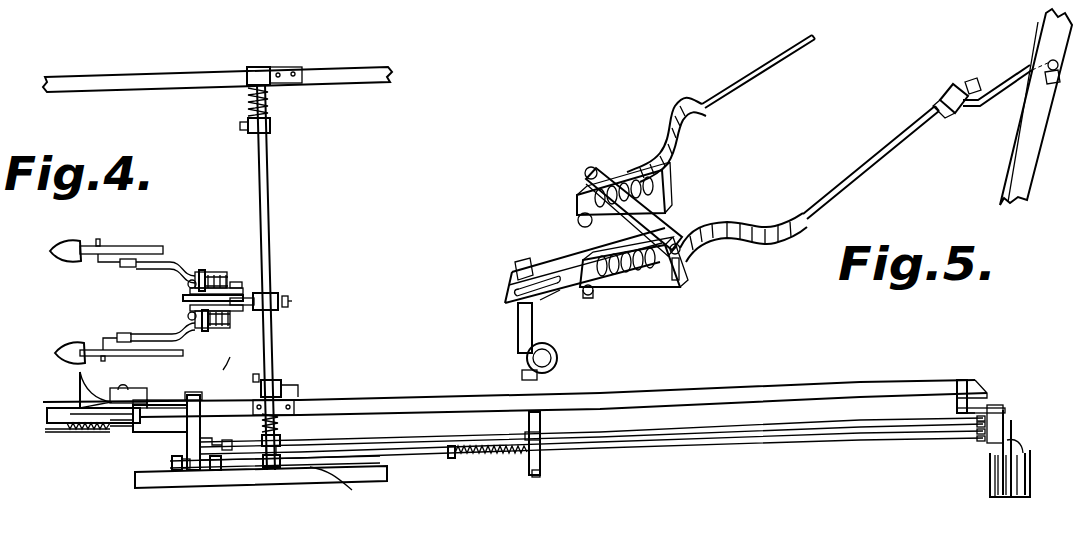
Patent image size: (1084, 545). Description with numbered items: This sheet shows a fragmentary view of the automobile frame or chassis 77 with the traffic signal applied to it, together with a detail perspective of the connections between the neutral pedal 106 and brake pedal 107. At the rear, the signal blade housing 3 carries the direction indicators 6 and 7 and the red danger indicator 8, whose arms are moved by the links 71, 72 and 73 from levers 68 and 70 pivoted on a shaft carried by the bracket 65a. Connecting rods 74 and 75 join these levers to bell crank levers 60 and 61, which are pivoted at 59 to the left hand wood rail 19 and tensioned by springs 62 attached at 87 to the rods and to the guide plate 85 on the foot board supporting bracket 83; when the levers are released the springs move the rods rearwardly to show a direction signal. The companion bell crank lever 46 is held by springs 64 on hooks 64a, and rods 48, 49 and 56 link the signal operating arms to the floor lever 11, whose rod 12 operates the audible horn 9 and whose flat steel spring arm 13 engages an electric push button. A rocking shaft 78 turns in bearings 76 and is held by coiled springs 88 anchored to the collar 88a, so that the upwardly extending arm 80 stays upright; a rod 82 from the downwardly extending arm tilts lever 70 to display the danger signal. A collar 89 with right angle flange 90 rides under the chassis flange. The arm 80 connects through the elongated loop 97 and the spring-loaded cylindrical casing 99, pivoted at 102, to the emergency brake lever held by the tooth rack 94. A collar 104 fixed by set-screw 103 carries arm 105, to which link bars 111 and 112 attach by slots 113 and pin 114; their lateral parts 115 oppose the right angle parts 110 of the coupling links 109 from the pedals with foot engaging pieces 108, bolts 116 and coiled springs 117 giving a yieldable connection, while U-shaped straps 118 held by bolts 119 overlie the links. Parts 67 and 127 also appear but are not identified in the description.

In FIG. 4, the signal blade housing 3 is at (1030, 485).
In FIG. 4, the direction indicator 6 is at (995, 493).
In FIG. 4, the direction indicator 7 is at (1008, 497).
In FIG. 4, the danger indicator 8 is at (1018, 493).
In FIG. 4, the audible signal horn 9 is at (110, 381).
In FIG. 4, the lever 11 is at (190, 397).
In FIG. 4, the rod 12 is at (123, 384).
In FIG. 4, the flat steel spring arm 13 is at (143, 398).
In FIG. 4, the left hand wood rail 19 is at (310, 473).
In FIG. 4, the bell crank lever 46 is at (220, 470).
In FIG. 4, the rod 48 is at (180, 402).
In FIG. 4, the rod 49 is at (193, 422).
In FIG. 4, the rod 56 is at (178, 404).
In FIG. 4, the pivot 59 is at (275, 468).
In FIG. 4, the bell crank lever 60 is at (280, 457).
In FIG. 4, the bell crank lever 61 is at (275, 479).
In FIG. 4, the springs 62 is at (495, 456).
In FIG. 4, the springs 64 is at (176, 472).
In FIG. 4, the hooks 64a is at (190, 472).
In FIG. 4, the bracket 65a is at (970, 403).
In FIG. 4, the plate 67 is at (1005, 427).
In FIG. 4, the lever 68 is at (1015, 433).
In FIG. 4, the lever 70 is at (1020, 422).
In FIG. 4, the link 71 is at (990, 455).
In FIG. 4, the link 72 is at (1003, 447).
In FIG. 4, the link 73 is at (1020, 447).
In FIG. 4, the connecting rod 74 is at (677, 448).
In FIG. 4, the connecting rod 75 is at (718, 440).
In FIG. 4, the bearings 76 is at (257, 72).
In FIG. 4, the frame or chassis 77 is at (163, 88).
In FIG. 4, the rocking shaft 78 is at (270, 216).
In FIG. 4, the upwardly extending arm 80 is at (280, 434).
In FIG. 4, the rod 82 is at (728, 433).
In FIG. 4, the foot board supporting bracket 83 is at (541, 474).
In FIG. 4, the guide plate 85 is at (542, 458).
In FIG. 4, the spring connection 87 is at (450, 470).
In FIG. 4, the coiled springs 88 is at (270, 105).
In FIG. 4, the collar 88a is at (270, 127).
In FIG. 4, the collar 89 is at (255, 378).
In FIG. 4, the right angle flange 90 is at (298, 383).
In FIG. 4, the tooth rack or quadrant 94 is at (65, 432).
In FIG. 4, the elongated loop 97 is at (70, 413).
In FIG. 4, the cylindrical casing 99 is at (118, 428).
In FIG. 4, the pivot connection 102 is at (120, 432).
In FIG. 4, the set-screw 103 is at (292, 301).
In FIG. 5, the set-screw 103 is at (557, 378).
In FIG. 4, the collar 104 is at (278, 294).
In FIG. 5, the collar 104 is at (530, 365).
In FIG. 5, the arm 105 is at (540, 334).
In FIG. 4, the neutral pedal 106 is at (165, 352).
In FIG. 4, the brake pedal 107 is at (160, 233).
In FIG. 5, the brake pedal 107 is at (1017, 153).
In FIG. 4, the foot engaging pieces 108 is at (72, 345).
In FIG. 4, the coupling links 109 is at (155, 270).
In FIG. 5, the coupling links 109 is at (758, 77).
In FIG. 4, the right angle parts 110 is at (226, 298).
In FIG. 5, the right angle parts 110 is at (577, 220).
In FIG. 5, the link bar 111 is at (576, 295).
In FIG. 5, the link bar 112 is at (560, 244).
In FIG. 5, the slots 113 is at (518, 320).
In FIG. 5, the pin 114 is at (550, 310).
In FIG. 4, the lateral parts 115 is at (207, 302).
In FIG. 5, the lateral parts 115 is at (660, 177).
In FIG. 4, the bolts 116 is at (233, 297).
In FIG. 5, the bolts 116 is at (690, 286).
In FIG. 4, the coiled springs 117 is at (226, 345).
In FIG. 5, the coiled springs 117 is at (574, 197).
In FIG. 4, the U-shaped straps 118 is at (203, 269).
In FIG. 5, the U-shaped straps 118 is at (660, 205).
In FIG. 5, the bolts 119 is at (587, 169).
In FIG. 4, the elbow 127 is at (202, 408).